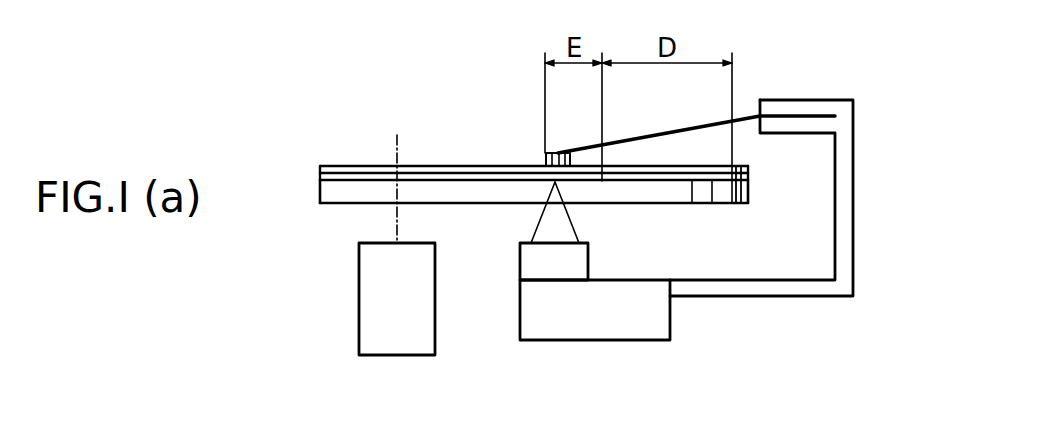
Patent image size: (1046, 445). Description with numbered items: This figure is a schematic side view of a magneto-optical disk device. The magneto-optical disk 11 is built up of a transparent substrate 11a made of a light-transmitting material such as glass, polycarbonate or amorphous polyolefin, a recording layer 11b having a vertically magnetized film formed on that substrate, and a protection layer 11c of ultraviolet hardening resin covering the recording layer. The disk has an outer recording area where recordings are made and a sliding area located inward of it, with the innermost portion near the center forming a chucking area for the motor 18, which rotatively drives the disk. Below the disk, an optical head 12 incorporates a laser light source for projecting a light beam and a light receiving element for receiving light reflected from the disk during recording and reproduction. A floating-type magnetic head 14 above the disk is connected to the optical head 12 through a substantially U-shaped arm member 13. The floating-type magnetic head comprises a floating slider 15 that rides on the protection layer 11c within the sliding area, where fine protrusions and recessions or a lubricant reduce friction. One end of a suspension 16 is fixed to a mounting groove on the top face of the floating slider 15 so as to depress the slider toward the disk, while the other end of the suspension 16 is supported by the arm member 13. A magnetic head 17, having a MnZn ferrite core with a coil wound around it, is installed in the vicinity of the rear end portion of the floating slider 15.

The magneto-optical disk 11 is at (496, 217).
The transparent substrate 11a is at (320, 190).
The recording layer 11b is at (320, 176).
The protection layer 11c is at (320, 168).
The optical head 12 is at (580, 258).
The arm member 13 is at (853, 140).
The floating-type magnetic head 14 is at (537, 149).
The floating slider 15 is at (545, 163).
The suspension 16 is at (643, 135).
The magnetic head 17 is at (548, 153).
The motor 18 is at (368, 325).